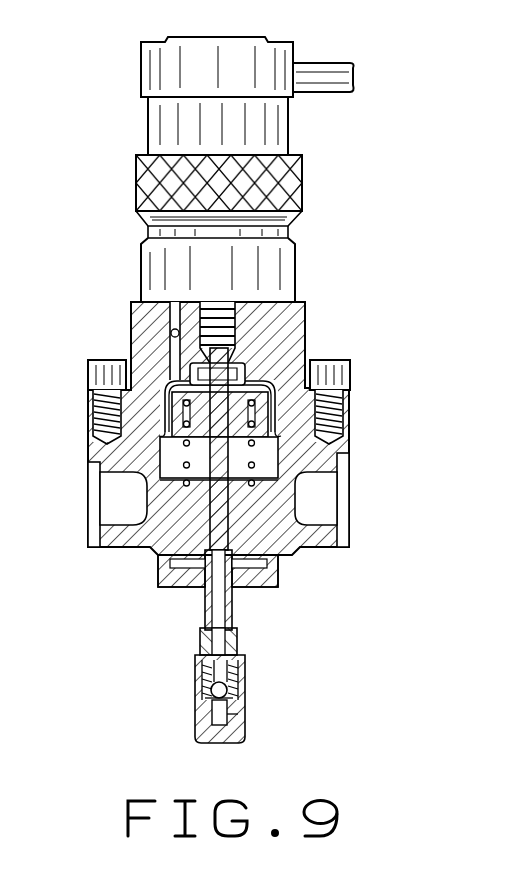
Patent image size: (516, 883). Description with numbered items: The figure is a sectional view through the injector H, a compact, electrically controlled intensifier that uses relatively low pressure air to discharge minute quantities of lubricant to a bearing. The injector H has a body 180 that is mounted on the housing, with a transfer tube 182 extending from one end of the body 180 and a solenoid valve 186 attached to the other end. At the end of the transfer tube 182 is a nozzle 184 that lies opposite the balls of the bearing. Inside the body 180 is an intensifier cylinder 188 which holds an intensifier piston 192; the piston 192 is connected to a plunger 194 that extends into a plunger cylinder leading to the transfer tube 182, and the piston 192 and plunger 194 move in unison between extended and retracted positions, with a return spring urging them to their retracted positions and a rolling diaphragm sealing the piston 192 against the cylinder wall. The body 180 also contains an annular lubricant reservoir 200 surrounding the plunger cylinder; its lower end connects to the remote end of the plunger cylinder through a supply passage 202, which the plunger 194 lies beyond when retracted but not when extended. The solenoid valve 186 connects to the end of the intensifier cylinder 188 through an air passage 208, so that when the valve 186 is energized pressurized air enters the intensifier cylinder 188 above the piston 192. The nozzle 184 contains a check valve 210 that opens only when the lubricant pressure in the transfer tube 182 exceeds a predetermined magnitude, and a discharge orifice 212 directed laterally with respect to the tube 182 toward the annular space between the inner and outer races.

The body 180 is at (282, 318).
The transfer tube 182 is at (205, 610).
The nozzle 184 is at (197, 724).
The solenoid valve 186 is at (136, 190).
The intensifier cylinder 188 is at (176, 450).
The intensifier piston 192 is at (348, 360).
The plunger 194 is at (295, 527).
The lubricant reservoir 200 is at (315, 510).
The supply passage 202 is at (257, 565).
The air passage 208 is at (170, 330).
The check valve 210 is at (219, 690).
The discharge orifice 212 is at (238, 718).
The injector H is at (116, 268).